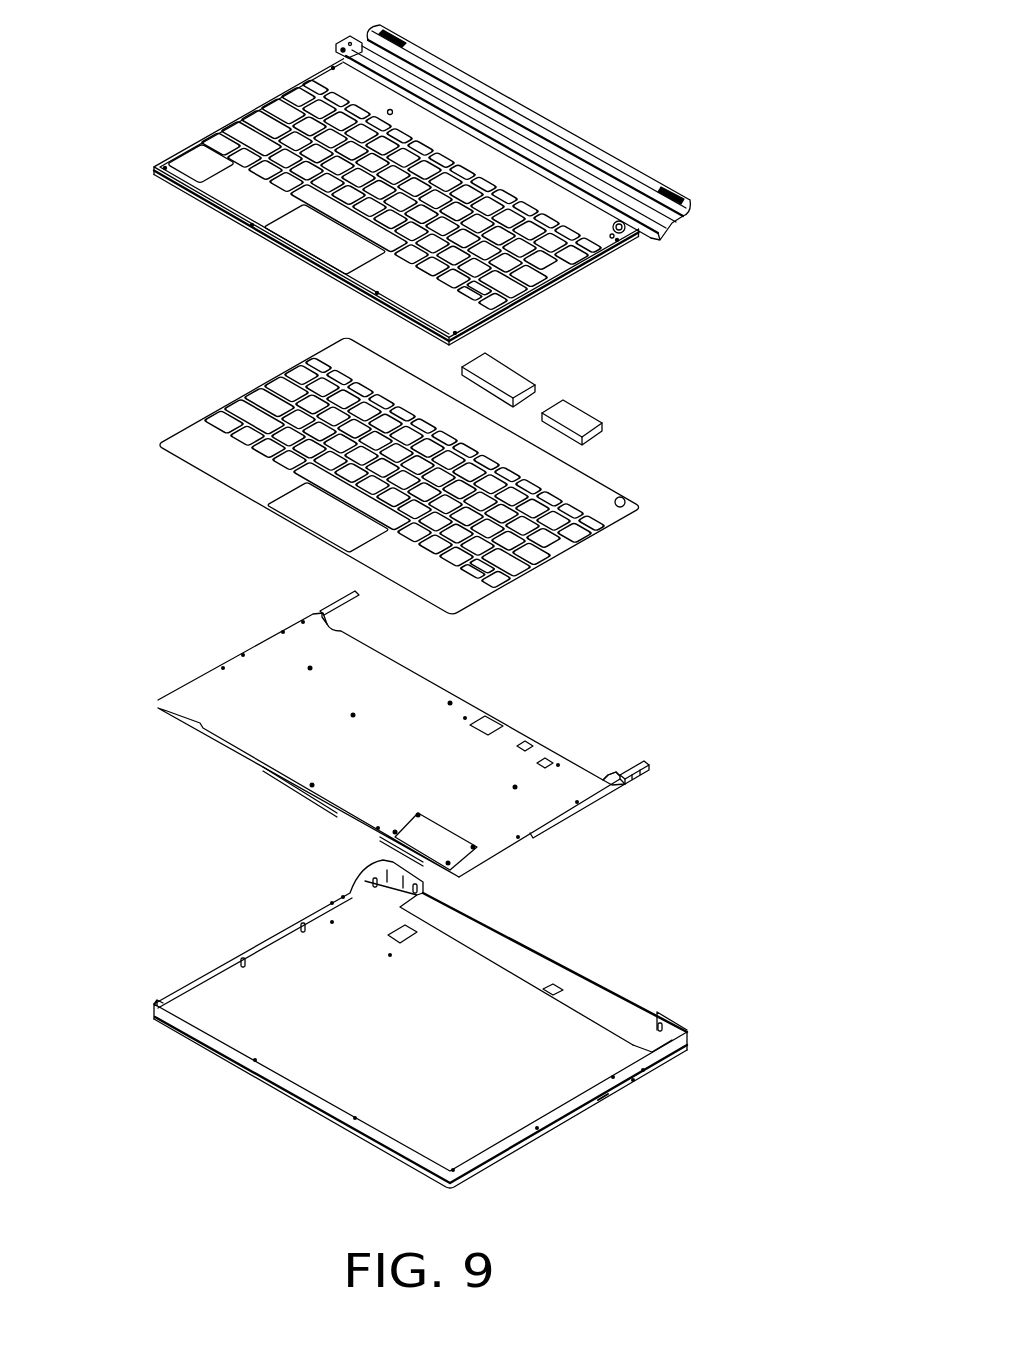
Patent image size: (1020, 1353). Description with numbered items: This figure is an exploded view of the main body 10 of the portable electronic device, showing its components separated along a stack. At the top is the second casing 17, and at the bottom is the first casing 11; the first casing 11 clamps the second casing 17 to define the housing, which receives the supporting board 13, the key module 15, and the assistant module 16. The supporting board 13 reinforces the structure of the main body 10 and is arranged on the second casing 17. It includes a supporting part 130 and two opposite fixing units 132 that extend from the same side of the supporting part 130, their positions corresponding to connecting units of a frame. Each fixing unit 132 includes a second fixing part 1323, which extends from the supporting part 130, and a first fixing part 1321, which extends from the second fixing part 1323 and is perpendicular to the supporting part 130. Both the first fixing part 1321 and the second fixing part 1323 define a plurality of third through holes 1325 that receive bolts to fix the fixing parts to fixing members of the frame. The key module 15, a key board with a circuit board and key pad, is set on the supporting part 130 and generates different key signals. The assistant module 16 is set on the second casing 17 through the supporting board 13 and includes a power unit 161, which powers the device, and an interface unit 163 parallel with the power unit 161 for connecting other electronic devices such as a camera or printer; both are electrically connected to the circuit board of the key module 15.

The main body 10 is at (667, 70).
The second casing 17 is at (178, 172).
The assistant module 16 is at (681, 302).
The power unit 161 is at (508, 380).
The interface unit 163 is at (570, 418).
The key module 15 is at (198, 450).
The supporting board 13 is at (231, 629).
The fixing unit 132 is at (765, 663).
The supporting part 130 is at (540, 803).
The second fixing part 1323 is at (337, 600).
The third through hole 1325 is at (617, 773).
The first fixing part 1321 is at (650, 771).
The first casing 11 is at (232, 997).